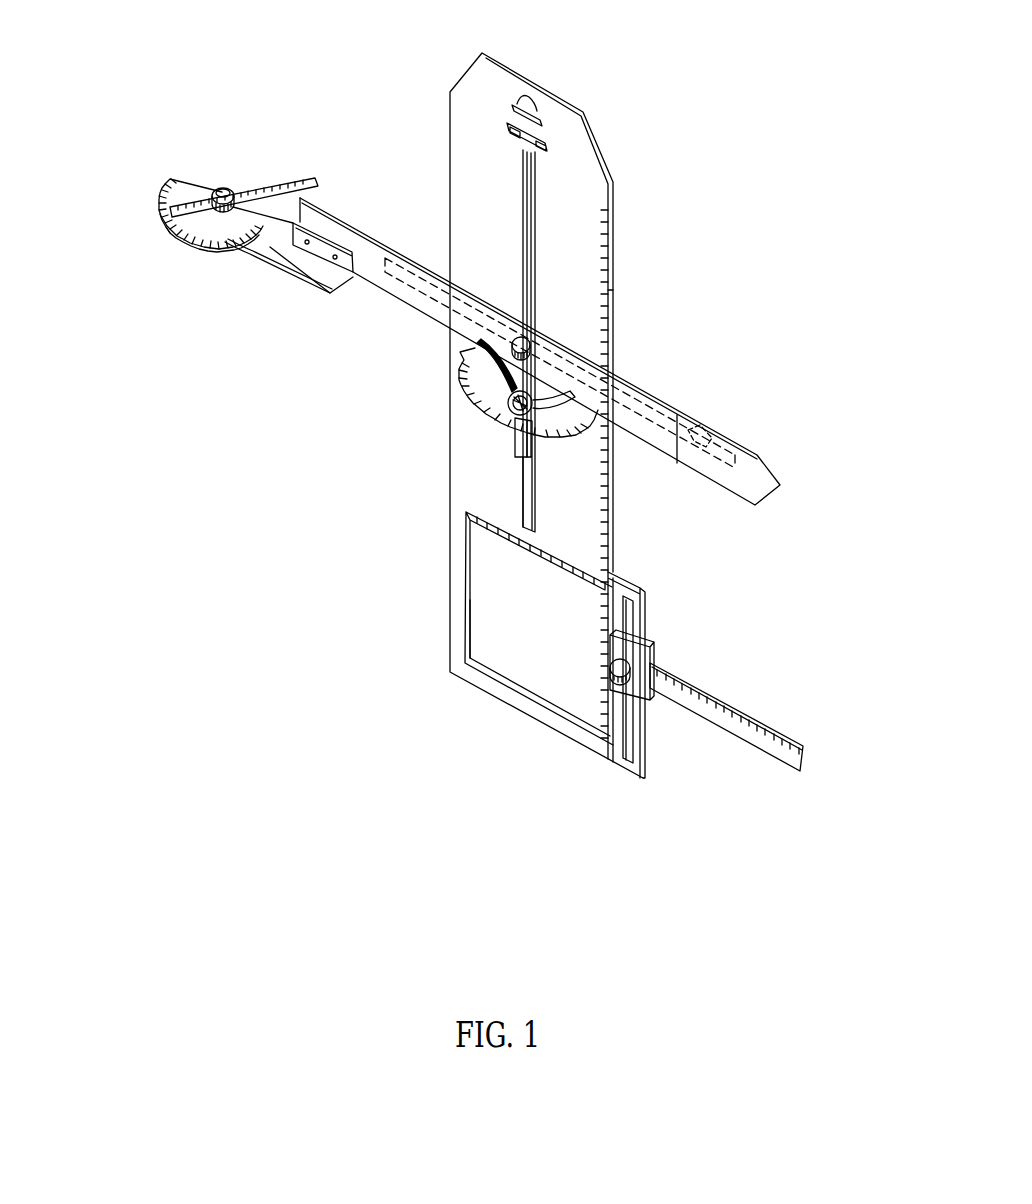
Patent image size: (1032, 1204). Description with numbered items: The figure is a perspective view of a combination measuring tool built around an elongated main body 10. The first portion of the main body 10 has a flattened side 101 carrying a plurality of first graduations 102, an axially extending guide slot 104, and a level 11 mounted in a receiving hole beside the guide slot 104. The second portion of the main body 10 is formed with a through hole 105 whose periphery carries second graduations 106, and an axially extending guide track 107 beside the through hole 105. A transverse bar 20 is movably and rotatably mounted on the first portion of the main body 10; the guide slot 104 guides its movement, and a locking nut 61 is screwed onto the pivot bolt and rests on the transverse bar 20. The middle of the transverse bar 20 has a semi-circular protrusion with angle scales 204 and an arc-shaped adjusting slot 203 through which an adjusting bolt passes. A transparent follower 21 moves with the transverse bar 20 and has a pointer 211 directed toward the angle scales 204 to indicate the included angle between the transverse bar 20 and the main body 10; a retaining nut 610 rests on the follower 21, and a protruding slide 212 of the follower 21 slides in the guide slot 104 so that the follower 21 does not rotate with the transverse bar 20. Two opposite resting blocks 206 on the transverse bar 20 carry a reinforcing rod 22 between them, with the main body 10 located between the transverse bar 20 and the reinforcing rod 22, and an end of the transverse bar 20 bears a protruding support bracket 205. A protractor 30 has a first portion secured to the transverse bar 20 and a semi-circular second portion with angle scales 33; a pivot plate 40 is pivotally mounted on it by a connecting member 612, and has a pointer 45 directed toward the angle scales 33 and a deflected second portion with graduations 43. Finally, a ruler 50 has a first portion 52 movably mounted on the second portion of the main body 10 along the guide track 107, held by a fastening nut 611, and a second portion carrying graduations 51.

The main body 10 is at (620, 124).
The level 11 is at (512, 121).
The guide slot 104 is at (521, 194).
The first graduations 102 is at (613, 257).
The flattened side 101 is at (613, 292).
The second graduations 106 is at (490, 530).
The through hole 105 is at (527, 656).
The guide track 107 is at (630, 772).
The ruler 50 is at (717, 730).
The first portion of the ruler 52 is at (625, 633).
The fastening nut 611 is at (620, 676).
The graduations 51 is at (740, 705).
The transverse bar 20 is at (611, 390).
The reinforcing rod 22 is at (655, 386).
The resting blocks 206 is at (740, 445).
The locking nut 61 is at (533, 346).
The angle scales 204 is at (480, 380).
The adjusting slot 203 is at (477, 350).
The slide 212 is at (575, 397).
The retaining nut 610 is at (533, 406).
The pointer 211 is at (516, 426).
The follower 21 is at (520, 452).
The support bracket 205 is at (325, 258).
The protractor 30 is at (190, 216).
The pointer 45 is at (163, 200).
The angle scales 33 is at (172, 238).
The graduations 43 is at (283, 185).
The pivot plate 40 is at (238, 180).
The connecting member 612 is at (222, 190).